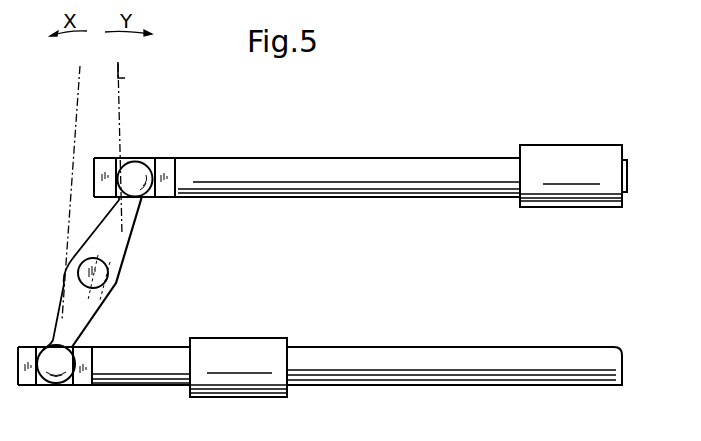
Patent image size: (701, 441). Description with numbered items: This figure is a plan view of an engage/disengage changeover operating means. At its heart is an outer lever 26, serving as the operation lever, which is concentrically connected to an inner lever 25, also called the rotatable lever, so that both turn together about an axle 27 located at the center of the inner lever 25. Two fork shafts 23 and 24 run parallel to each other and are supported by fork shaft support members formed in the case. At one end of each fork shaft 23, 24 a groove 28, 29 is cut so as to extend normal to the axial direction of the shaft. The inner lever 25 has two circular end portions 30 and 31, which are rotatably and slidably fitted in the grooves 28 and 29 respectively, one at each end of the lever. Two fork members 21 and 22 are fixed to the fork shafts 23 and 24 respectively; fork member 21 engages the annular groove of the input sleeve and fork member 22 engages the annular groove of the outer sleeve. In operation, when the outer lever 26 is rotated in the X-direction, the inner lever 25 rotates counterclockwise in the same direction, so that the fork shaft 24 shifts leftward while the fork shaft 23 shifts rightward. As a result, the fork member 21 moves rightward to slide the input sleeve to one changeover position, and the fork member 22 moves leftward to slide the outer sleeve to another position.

The fork member 21 is at (233, 389).
The fork member 22 is at (580, 197).
The fork shaft 23 is at (513, 376).
The fork shaft 24 is at (493, 188).
The inner lever 25 is at (62, 302).
The outer lever 26 is at (127, 72).
The axle 27 is at (98, 276).
The groove 28 is at (65, 389).
The groove 29 is at (147, 163).
The circular end portion 30 is at (44, 383).
The circular end portion 31 is at (133, 160).